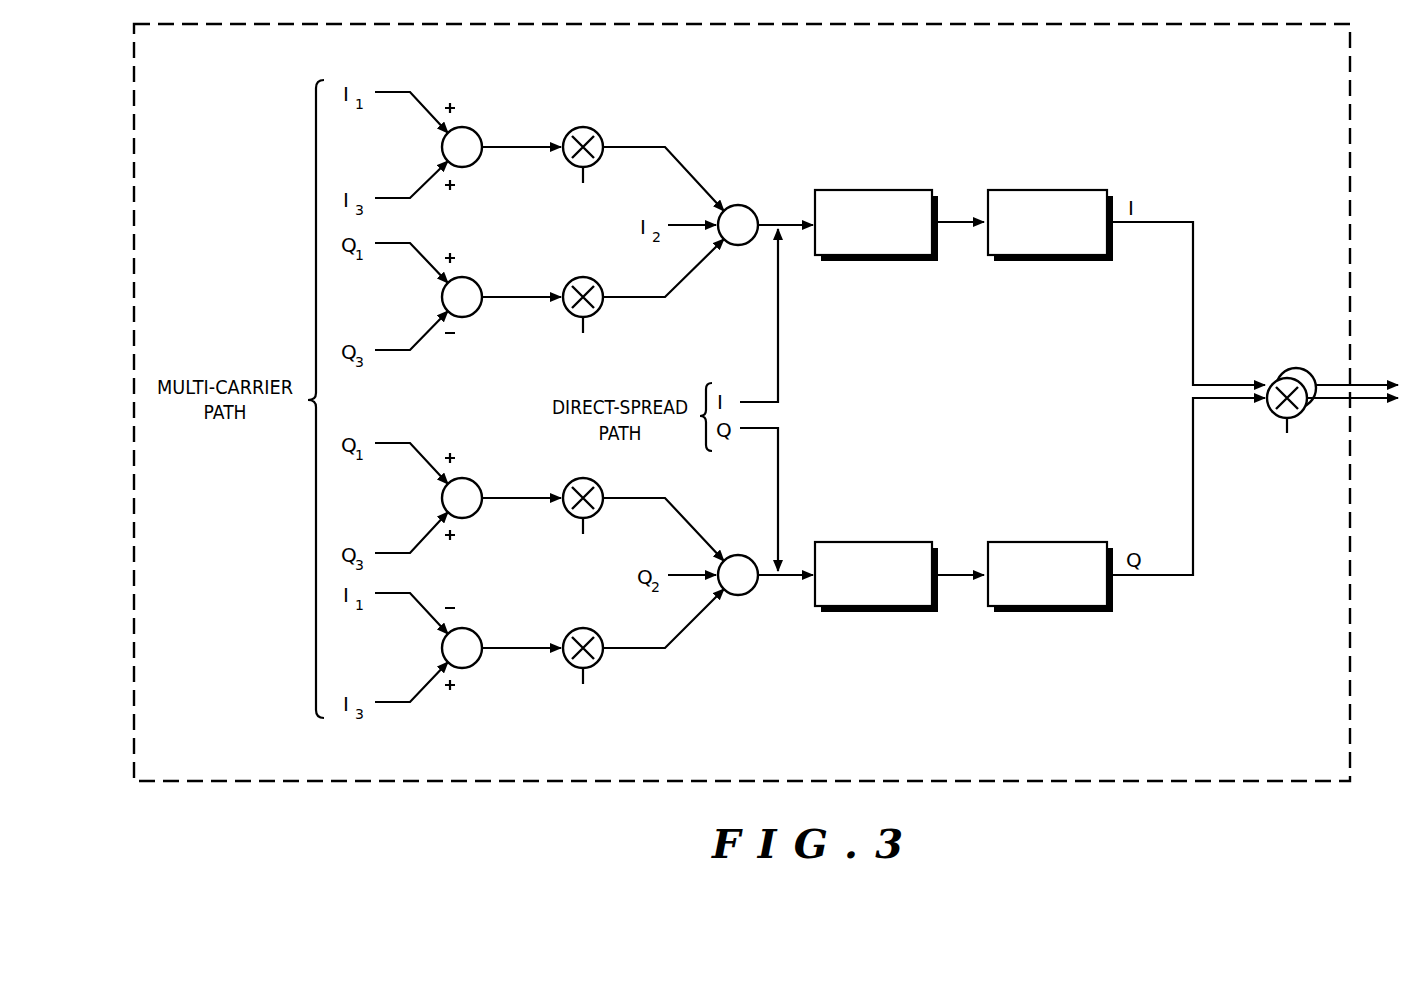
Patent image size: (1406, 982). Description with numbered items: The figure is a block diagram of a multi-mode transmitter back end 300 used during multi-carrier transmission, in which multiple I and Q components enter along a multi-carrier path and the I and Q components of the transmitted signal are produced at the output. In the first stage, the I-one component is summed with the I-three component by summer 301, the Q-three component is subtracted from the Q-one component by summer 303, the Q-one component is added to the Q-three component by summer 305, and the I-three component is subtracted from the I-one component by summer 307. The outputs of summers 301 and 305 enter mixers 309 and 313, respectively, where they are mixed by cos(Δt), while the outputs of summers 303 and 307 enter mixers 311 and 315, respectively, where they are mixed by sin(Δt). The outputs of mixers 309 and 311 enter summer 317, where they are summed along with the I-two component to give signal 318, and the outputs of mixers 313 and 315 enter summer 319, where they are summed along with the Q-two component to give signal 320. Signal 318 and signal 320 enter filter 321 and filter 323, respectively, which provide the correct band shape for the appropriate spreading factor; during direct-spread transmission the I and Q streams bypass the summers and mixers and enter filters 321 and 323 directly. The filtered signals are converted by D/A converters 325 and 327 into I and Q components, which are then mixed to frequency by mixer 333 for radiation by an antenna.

The transmitter back end 300 is at (612, 782).
The summer 301 is at (473, 163).
The summer 303 is at (473, 313).
The summer 305 is at (473, 514).
The summer 307 is at (473, 664).
The mixer 309 is at (580, 127).
The mixer 311 is at (580, 277).
The mixer 313 is at (580, 478).
The mixer 315 is at (580, 628).
The summer 317 is at (736, 246).
The signal 318 is at (781, 220).
The summer 319 is at (741, 554).
The signal 320 is at (783, 578).
The filter 321 is at (873, 264).
The filter 323 is at (873, 617).
The D/A converter 325 is at (1048, 264).
The D/A converter 327 is at (1048, 617).
The mixer 333 is at (1291, 371).